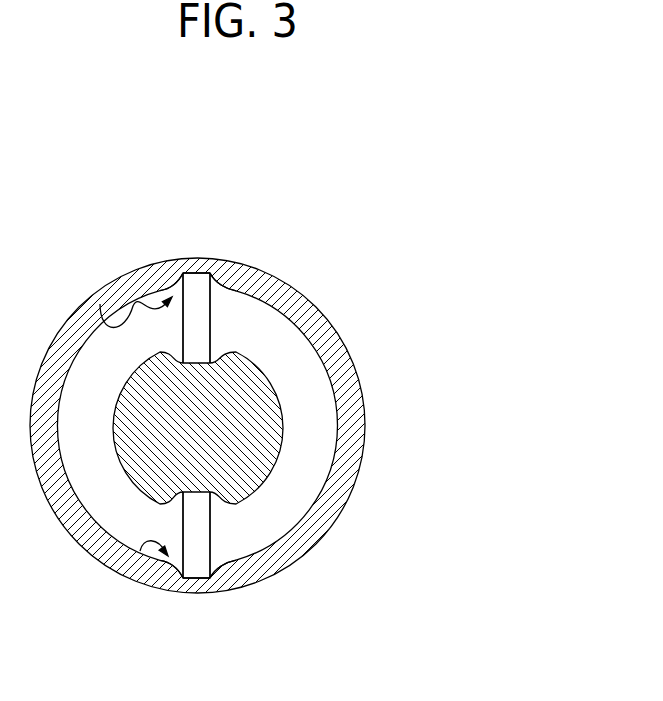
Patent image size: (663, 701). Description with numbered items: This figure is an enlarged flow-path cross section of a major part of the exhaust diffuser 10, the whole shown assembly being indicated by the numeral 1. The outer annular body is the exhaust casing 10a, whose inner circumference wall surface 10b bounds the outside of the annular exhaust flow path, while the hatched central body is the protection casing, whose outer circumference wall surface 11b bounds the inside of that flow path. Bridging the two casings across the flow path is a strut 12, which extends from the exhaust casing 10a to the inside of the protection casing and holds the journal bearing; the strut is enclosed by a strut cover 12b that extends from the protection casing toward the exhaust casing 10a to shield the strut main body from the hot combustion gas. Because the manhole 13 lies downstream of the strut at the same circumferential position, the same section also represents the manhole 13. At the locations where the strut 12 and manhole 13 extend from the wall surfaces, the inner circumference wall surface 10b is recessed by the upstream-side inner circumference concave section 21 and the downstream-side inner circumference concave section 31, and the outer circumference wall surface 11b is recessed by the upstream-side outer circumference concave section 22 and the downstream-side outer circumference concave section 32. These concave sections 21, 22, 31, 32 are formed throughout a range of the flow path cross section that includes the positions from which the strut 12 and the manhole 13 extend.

The steering device 1 is at (517, 123).
The exhaust diffuser 10 is at (413, 183).
The exhaust casing 10a is at (362, 452).
The inner circumference wall surface 10b is at (95, 305).
The outer circumference wall surface 11b is at (267, 366).
The strut 12 is at (259, 394).
The strut cover 12b is at (211, 305).
The manhole 13 is at (238, 282).
The upstream-side inner circumference concave section 21 is at (152, 395).
The upstream-side outer circumference concave section 22 is at (309, 415).
The downstream-side inner circumference concave section 31 is at (132, 303).
The downstream-side outer circumference concave section 32 is at (231, 338).